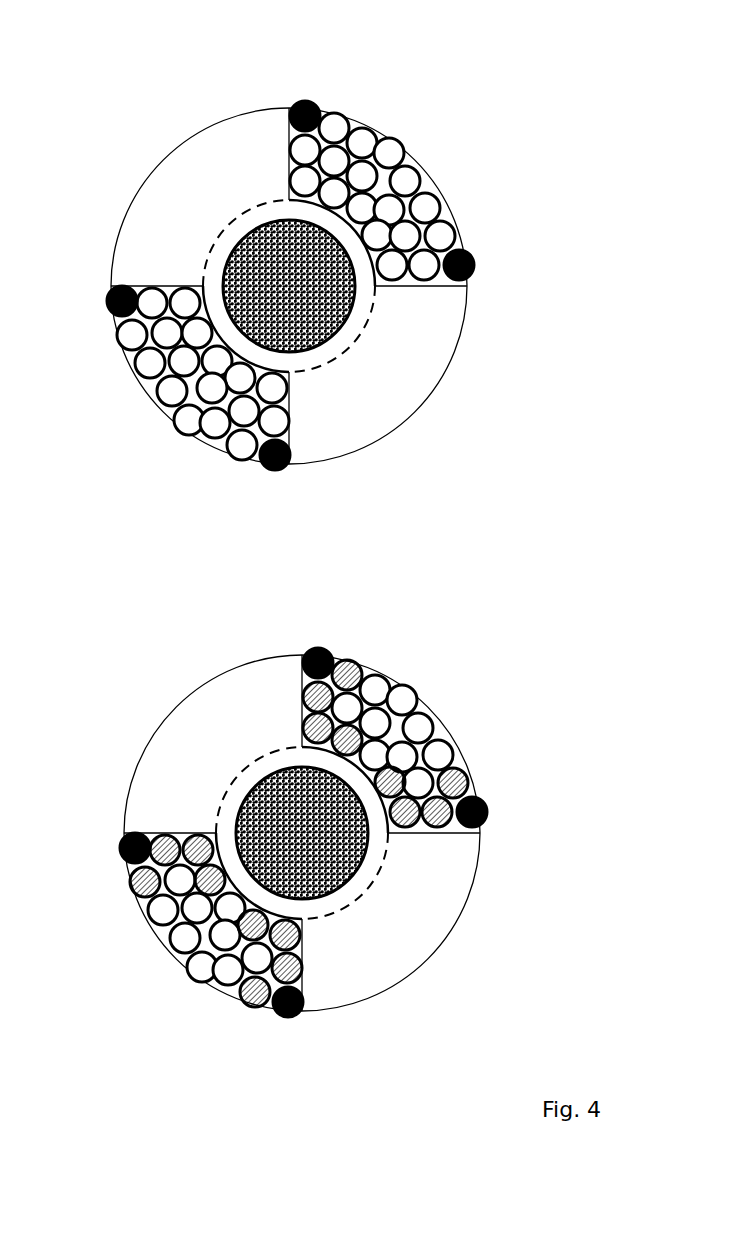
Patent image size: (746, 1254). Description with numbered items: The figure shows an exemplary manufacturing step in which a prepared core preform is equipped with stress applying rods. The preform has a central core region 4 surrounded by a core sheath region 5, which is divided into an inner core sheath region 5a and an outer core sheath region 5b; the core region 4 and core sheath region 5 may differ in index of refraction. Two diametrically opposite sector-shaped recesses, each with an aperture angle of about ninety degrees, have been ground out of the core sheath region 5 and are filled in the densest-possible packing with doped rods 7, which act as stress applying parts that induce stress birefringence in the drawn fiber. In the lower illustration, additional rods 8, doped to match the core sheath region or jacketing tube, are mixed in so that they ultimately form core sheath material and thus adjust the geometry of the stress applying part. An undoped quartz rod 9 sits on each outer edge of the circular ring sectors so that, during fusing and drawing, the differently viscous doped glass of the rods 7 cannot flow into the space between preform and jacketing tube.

The core region 4 is at (280, 257).
The core sheath region 5 is at (465, 323).
The inner core sheath region 5a is at (343, 347).
The outer core sheath region 5b is at (420, 363).
The doped rods 7 is at (390, 148).
The rods 8 is at (360, 660).
The undoped quartz rod 9 is at (310, 100).